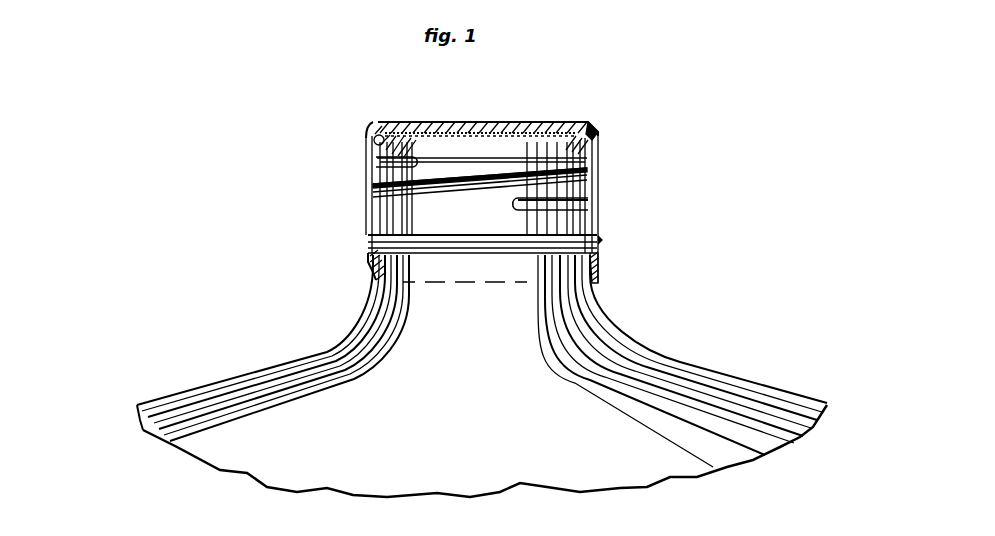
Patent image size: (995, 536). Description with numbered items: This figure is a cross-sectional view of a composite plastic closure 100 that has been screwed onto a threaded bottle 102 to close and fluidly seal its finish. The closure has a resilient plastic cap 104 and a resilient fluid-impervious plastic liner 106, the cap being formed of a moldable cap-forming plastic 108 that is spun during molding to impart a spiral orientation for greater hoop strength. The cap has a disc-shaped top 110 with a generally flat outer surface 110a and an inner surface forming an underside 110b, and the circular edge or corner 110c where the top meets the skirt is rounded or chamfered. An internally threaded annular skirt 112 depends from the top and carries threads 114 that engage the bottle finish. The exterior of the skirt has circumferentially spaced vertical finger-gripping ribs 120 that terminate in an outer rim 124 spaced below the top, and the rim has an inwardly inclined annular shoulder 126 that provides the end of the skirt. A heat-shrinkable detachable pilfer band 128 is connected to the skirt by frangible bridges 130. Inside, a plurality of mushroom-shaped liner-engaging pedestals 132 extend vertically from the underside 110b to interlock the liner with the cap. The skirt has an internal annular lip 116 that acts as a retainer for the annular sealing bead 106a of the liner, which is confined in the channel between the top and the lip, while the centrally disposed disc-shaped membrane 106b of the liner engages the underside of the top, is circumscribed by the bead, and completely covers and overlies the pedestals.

The composite plastic closure 100 is at (312, 94).
The threaded bottle 102 is at (292, 360).
The resilient plastic cap 104 is at (600, 124).
The plastic liner 106 is at (596, 160).
The annular sealing bead 106a is at (604, 138).
The disc-shaped membrane portion 106b is at (483, 140).
The cap-forming plastic 108 is at (374, 186).
The top wall disc-shaped portion 110 is at (532, 120).
The flat outer surface 110a is at (496, 123).
The underside 110b is at (372, 141).
The circular edge or corner 110c is at (377, 126).
The annular skirt 112 is at (606, 240).
The threads 114 is at (598, 207).
The internal annular lip 116 is at (382, 160).
The vertical finger-gripping ribs 120 is at (600, 233).
The outer rim 124 is at (370, 237).
The inwardly inclined annular shoulder 126 is at (370, 244).
The pilfer band 128 is at (372, 270).
The frangible bridges 130 is at (372, 253).
The liner-engaging pedestals 132 is at (452, 146).